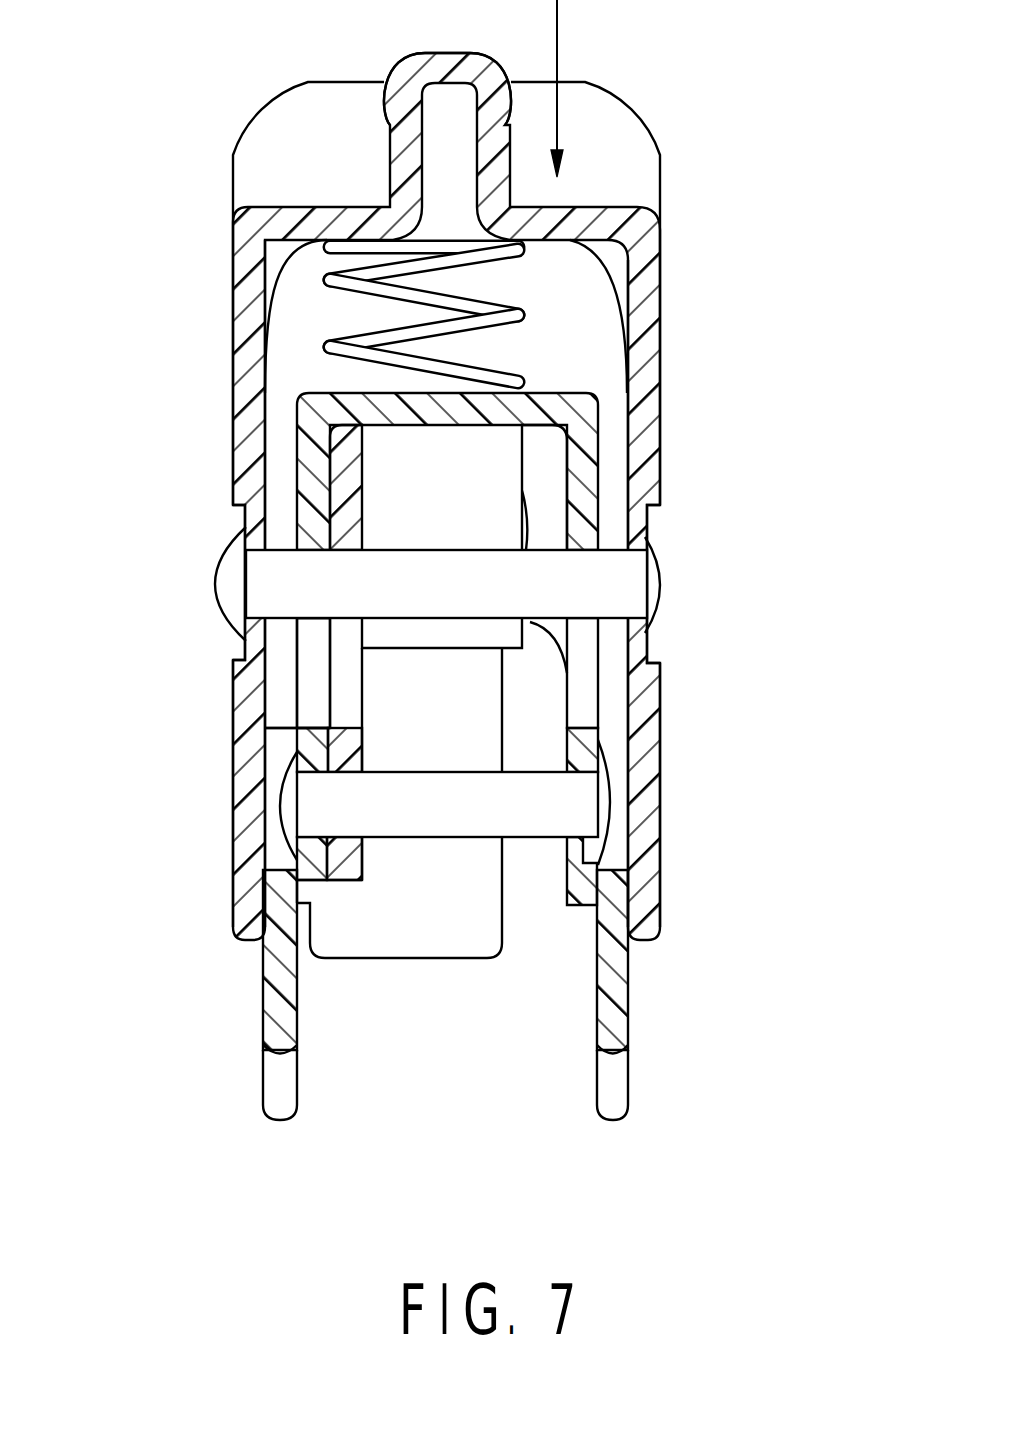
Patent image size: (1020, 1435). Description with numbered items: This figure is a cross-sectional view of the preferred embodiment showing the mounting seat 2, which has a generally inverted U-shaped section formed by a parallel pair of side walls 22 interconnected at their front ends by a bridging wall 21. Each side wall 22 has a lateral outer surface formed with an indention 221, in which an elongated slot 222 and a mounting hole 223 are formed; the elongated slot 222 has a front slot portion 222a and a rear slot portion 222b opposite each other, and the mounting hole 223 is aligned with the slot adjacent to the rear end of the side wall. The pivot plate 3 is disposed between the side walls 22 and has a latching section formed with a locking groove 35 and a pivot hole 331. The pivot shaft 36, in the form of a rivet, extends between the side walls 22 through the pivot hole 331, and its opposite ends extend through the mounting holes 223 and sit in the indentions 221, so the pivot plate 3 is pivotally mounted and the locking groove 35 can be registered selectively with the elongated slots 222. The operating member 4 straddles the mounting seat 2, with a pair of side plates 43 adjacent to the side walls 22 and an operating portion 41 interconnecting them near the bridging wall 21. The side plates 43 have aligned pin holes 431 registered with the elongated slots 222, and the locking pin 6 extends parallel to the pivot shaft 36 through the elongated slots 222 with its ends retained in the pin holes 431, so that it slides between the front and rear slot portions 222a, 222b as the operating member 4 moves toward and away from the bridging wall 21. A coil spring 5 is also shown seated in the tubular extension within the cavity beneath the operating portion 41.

The mounting seat 2 is at (640, 1030).
The bridging wall 21 is at (545, 395).
The side walls 22 is at (273, 998).
The indention 221 is at (605, 862).
The elongated slot 222 is at (582, 672).
The front slot portion 222a is at (305, 630).
The rear slot portion 222b is at (308, 673).
The mounting hole 223 is at (607, 738).
The pivot plate 3 is at (340, 852).
The pivot hole 331 is at (345, 830).
The locking groove 35 is at (348, 540).
The pivot shaft 36 is at (575, 807).
The operating member 4 is at (648, 280).
The operating portion 41 is at (592, 213).
The side plates 43 is at (647, 683).
The pin holes 431 is at (642, 502).
The coil spring 5 is at (510, 316).
The locking pin 6 is at (620, 583).